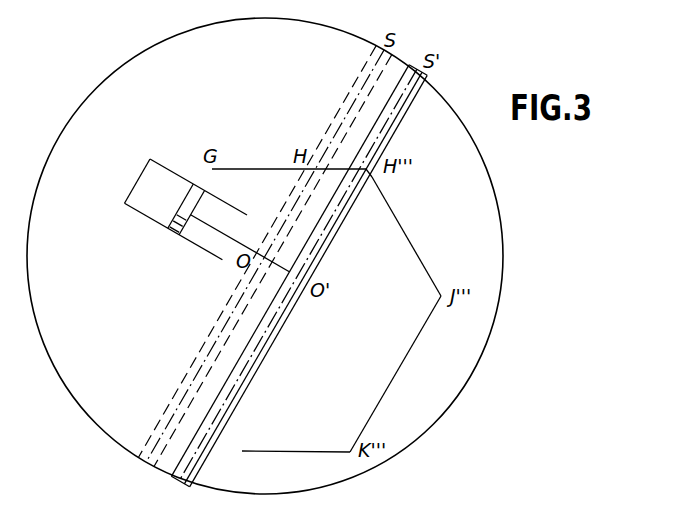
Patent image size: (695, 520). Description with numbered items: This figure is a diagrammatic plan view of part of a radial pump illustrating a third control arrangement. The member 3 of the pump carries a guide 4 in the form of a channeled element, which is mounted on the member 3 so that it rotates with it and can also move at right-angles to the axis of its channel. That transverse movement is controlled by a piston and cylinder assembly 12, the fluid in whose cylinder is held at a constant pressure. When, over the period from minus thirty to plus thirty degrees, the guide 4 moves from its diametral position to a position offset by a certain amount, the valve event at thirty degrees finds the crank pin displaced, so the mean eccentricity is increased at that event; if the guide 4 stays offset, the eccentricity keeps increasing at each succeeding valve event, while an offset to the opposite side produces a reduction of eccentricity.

The member 3 is at (80, 377).
The guide 4 is at (243, 388).
The piston and cylinder assembly 12 is at (150, 207).